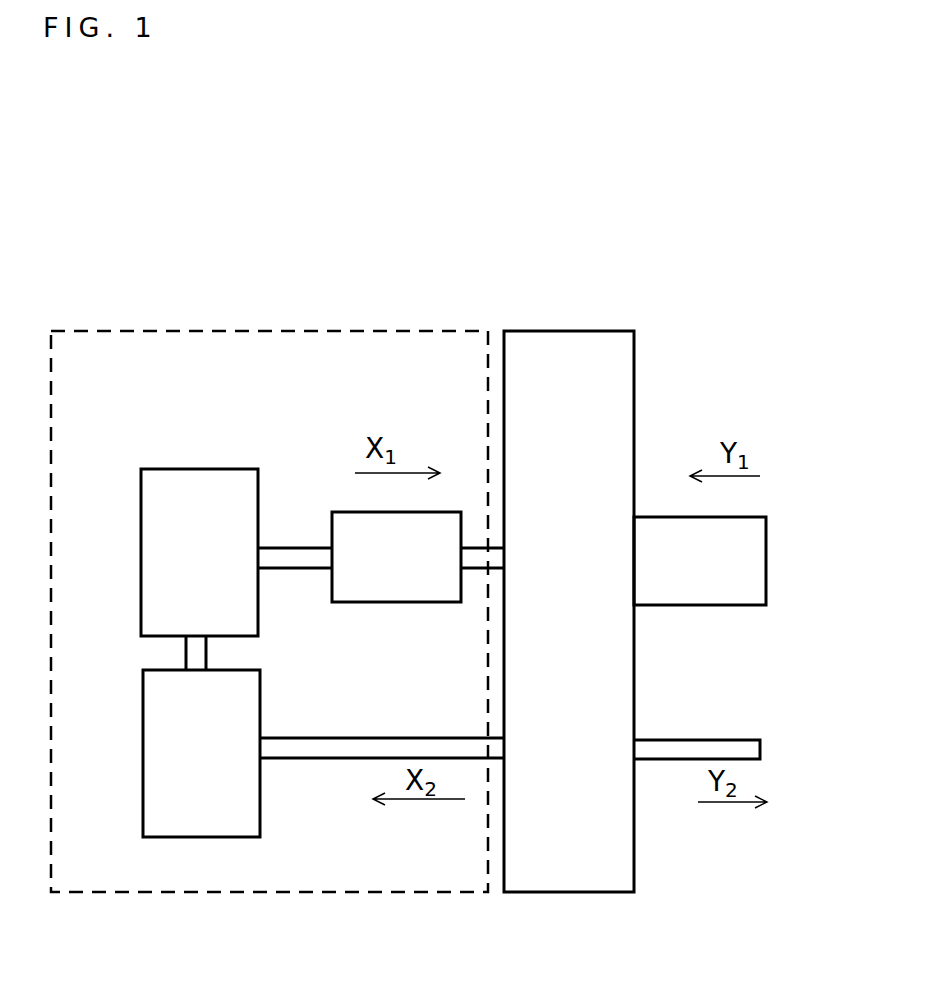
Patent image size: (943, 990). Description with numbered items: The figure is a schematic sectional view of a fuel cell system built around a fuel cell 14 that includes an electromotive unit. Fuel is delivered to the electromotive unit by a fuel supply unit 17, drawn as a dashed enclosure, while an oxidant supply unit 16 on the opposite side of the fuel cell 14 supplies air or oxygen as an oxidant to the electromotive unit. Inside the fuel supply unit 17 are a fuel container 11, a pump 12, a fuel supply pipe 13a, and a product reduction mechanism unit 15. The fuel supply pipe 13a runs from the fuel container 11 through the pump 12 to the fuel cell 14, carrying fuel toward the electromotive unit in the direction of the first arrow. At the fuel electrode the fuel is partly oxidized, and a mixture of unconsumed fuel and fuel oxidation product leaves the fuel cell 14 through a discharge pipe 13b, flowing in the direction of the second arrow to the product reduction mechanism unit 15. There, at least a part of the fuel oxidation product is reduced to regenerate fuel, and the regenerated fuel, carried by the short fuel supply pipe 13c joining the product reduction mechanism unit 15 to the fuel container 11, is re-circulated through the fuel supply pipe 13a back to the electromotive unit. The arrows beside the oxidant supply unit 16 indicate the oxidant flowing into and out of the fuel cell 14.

The fuel container 11 is at (199, 552).
The pump 12 is at (396, 557).
The fuel supply pipe 13a is at (296, 558).
The discharge pipe 13b is at (314, 750).
The fuel supply pipe 13c is at (200, 653).
The fuel cell 14 is at (569, 611).
The product reduction mechanism unit 15 is at (201, 753).
The oxidant supply unit 16 is at (700, 561).
The fuel supply unit 17 is at (226, 331).